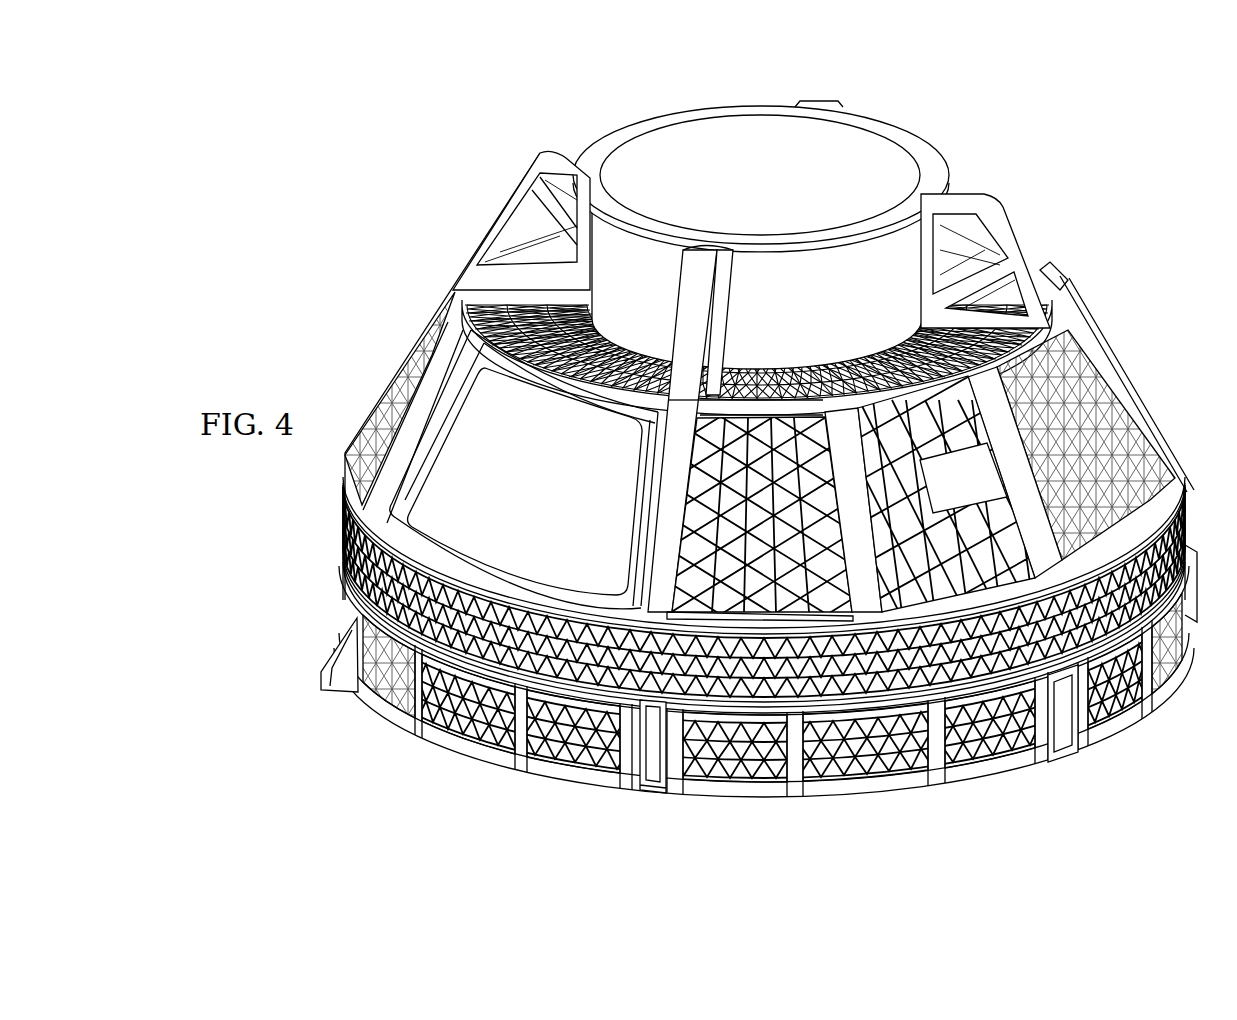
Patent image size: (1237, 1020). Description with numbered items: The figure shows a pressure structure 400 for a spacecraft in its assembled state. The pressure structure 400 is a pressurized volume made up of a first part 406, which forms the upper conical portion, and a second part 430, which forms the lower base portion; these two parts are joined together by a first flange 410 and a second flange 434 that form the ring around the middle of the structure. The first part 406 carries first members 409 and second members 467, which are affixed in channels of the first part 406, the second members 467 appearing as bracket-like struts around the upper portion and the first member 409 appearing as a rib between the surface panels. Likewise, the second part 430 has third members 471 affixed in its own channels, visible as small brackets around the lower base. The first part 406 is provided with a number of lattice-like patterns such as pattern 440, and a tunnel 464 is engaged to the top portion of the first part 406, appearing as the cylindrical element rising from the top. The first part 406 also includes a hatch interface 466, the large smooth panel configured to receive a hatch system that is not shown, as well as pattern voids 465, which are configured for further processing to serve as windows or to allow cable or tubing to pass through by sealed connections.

The pressure structure 400 is at (731, 440).
The first part 406 is at (403, 281).
The first members 409 is at (846, 398).
The first flange 410 is at (338, 532).
The second part 430 is at (384, 735).
The second flange 434 is at (338, 564).
The pattern 440 is at (704, 468).
The tunnel 464 is at (786, 166).
The pattern voids 465 is at (985, 495).
The hatch interface 466 is at (548, 495).
The second members 467 is at (530, 206).
The third members 471 is at (641, 792).